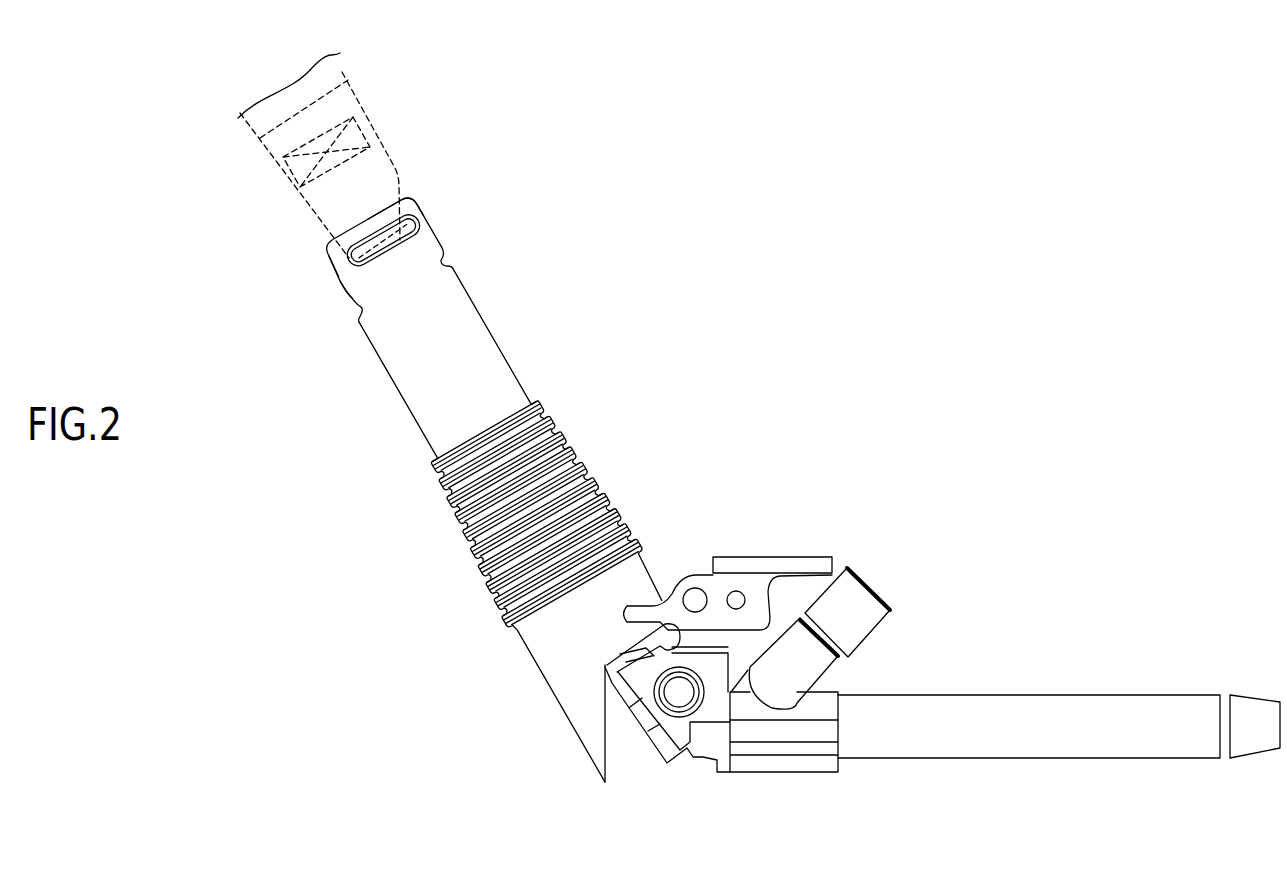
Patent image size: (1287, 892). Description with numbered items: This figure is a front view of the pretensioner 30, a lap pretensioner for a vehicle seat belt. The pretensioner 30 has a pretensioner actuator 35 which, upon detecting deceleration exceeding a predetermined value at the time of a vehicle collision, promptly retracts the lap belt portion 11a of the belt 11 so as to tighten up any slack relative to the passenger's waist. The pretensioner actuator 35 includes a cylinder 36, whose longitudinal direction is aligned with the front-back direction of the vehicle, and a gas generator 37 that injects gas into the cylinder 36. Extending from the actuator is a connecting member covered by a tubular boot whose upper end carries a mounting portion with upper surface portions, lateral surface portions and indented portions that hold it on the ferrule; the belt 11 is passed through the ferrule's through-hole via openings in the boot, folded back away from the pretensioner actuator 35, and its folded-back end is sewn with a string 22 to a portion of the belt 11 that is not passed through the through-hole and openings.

The belt 11 is at (354, 153).
The lap belt portion 11a is at (328, 86).
The string 22 is at (372, 122).
The pretensioner 30 is at (711, 199).
The pretensioner actuator 35 is at (1280, 772).
The cylinder 36 is at (1026, 695).
The gas generator 37 is at (855, 645).